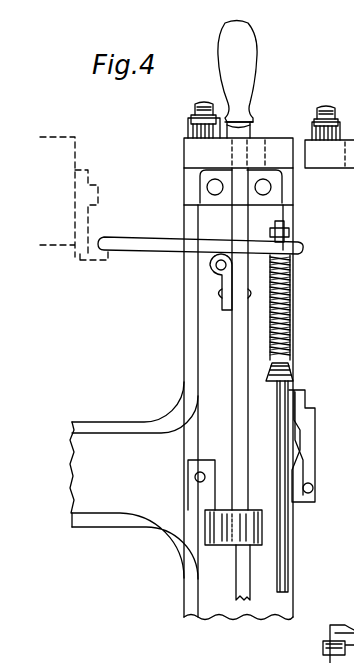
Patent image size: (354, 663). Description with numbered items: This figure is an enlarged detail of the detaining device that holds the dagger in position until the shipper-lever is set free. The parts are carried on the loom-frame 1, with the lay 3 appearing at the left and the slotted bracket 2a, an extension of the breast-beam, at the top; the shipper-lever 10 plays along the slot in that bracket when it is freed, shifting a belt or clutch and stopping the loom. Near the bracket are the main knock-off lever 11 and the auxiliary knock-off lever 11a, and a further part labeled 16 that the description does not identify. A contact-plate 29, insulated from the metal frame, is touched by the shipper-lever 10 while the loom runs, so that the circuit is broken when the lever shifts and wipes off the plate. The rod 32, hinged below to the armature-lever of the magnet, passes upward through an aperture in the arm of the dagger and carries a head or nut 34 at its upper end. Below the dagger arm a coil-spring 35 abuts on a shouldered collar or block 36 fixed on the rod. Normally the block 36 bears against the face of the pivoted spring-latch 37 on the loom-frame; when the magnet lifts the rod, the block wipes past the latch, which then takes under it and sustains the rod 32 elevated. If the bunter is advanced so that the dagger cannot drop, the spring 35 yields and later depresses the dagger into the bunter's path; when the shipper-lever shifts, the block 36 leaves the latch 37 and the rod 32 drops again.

The loom-frame 1 is at (111, 432).
The bracket 2a is at (186, 158).
The lay 3 is at (153, 240).
The shipper-lever 10 is at (236, 402).
The main knock-off lever 11 is at (190, 137).
The auxiliary knock-off lever 11a is at (193, 122).
The adjacent head block 16 is at (329, 162).
The contact-plate 29 is at (242, 540).
The rod 32 is at (286, 553).
The nut 34 is at (291, 233).
The coil-spring 35 is at (290, 301).
The shouldered collar or block 36 is at (293, 373).
The pivoted spring-latch 37 is at (297, 403).